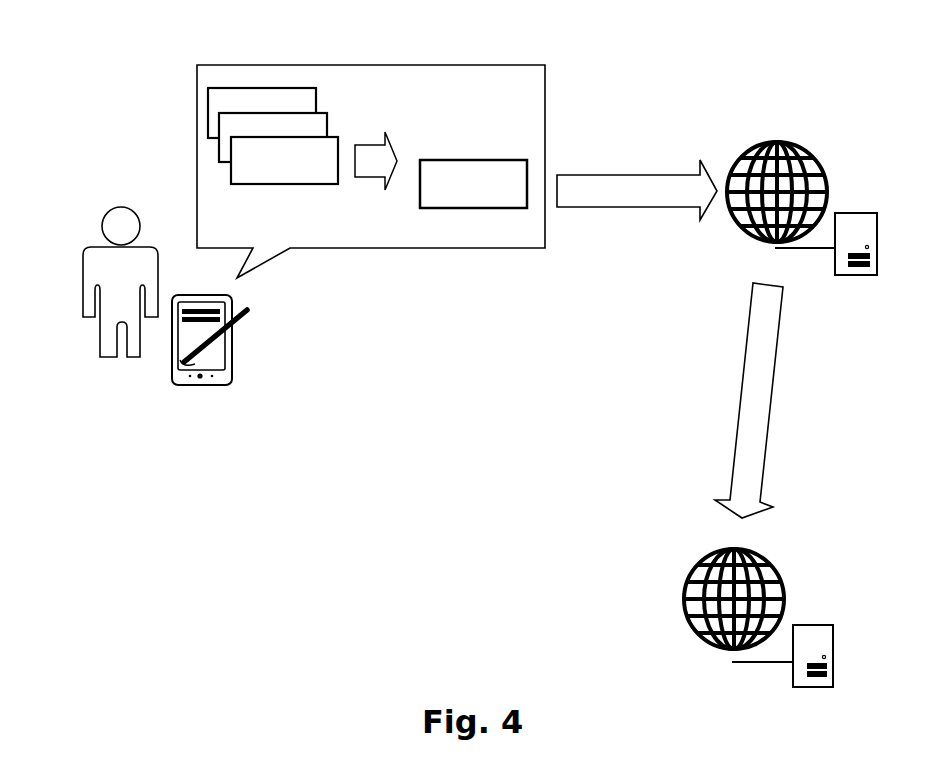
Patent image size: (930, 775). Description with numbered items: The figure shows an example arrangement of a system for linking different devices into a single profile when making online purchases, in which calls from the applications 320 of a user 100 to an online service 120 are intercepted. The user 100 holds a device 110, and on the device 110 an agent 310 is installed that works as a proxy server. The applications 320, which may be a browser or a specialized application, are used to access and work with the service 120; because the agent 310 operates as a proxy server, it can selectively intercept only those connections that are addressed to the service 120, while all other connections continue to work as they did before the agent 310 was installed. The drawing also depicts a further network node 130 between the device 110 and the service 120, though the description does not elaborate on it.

The user 100 is at (120, 207).
The device 110 is at (213, 387).
The service 120 is at (758, 555).
The network server 130 is at (795, 140).
The agent 310 is at (477, 160).
The applications 320 is at (287, 185).